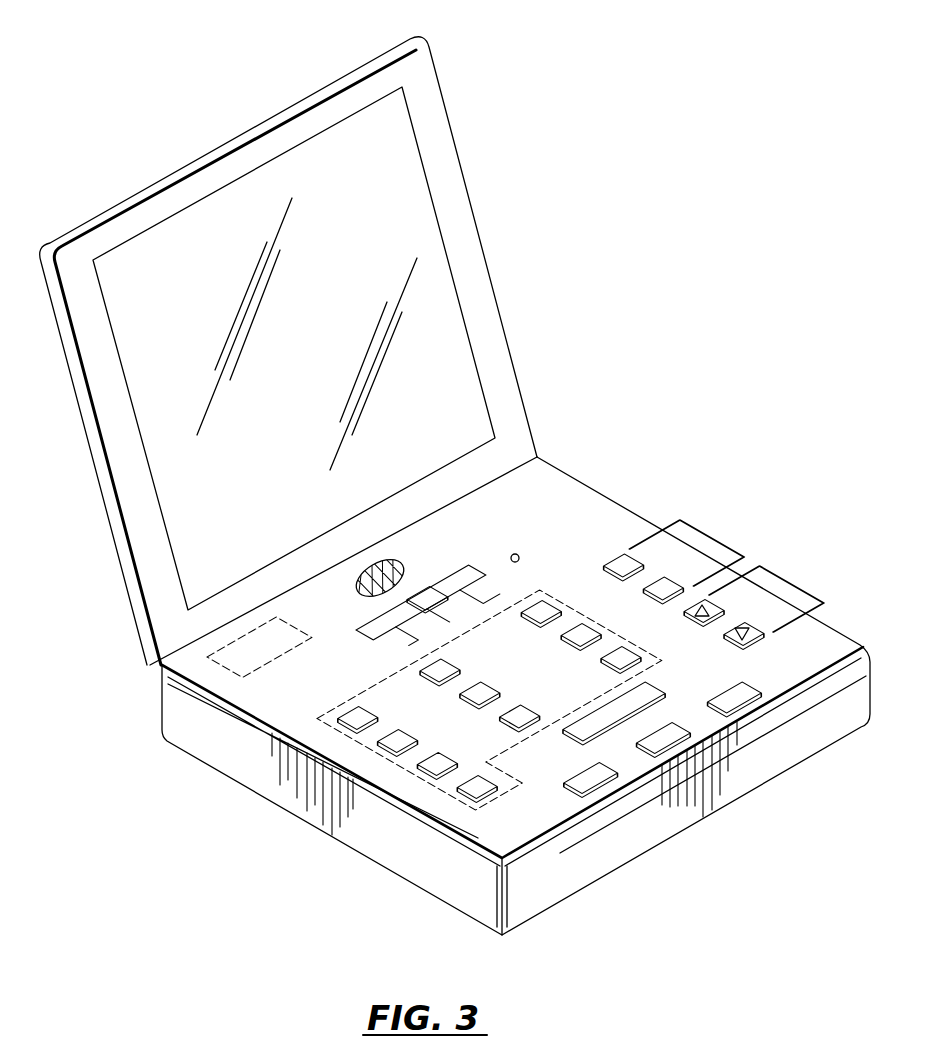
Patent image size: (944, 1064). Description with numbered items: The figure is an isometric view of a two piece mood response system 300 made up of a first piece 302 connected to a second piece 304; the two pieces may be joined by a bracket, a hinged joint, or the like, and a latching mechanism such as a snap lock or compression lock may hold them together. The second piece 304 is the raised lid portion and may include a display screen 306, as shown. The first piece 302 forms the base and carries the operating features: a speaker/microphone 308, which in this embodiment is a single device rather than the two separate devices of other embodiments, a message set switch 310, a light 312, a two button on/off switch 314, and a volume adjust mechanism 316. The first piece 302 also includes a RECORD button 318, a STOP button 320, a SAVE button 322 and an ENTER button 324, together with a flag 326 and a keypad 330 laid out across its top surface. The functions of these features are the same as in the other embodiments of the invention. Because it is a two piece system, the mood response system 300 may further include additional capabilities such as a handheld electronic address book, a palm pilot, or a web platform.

The mood response system 300 is at (608, 242).
The first piece 302 is at (207, 728).
The second piece 304 is at (288, 351).
The display screen 306 is at (395, 123).
The speaker/microphone 308 is at (362, 575).
The message set switch 310 is at (418, 607).
The light 312 is at (522, 552).
The two button on/off switch 314 is at (713, 537).
The volume adjust mechanism 316 is at (790, 582).
The RECORD button 318 is at (590, 780).
The STOP button 320 is at (662, 740).
The SAVE button 322 is at (737, 697).
The ENTER button 324 is at (657, 698).
The flag 326 is at (227, 668).
The keypad 330 is at (375, 752).